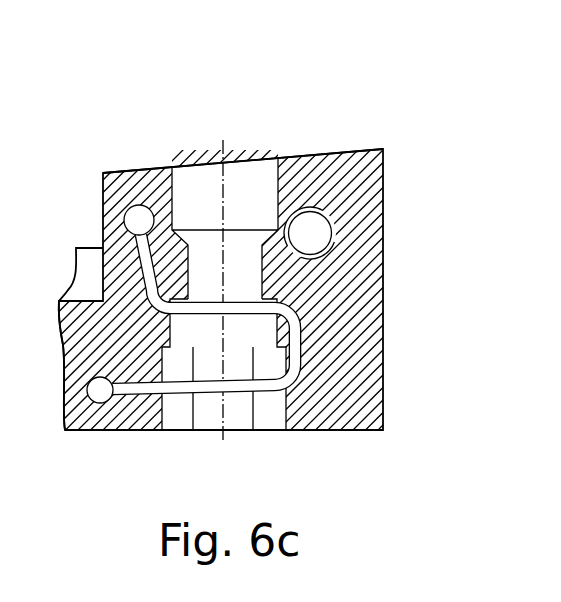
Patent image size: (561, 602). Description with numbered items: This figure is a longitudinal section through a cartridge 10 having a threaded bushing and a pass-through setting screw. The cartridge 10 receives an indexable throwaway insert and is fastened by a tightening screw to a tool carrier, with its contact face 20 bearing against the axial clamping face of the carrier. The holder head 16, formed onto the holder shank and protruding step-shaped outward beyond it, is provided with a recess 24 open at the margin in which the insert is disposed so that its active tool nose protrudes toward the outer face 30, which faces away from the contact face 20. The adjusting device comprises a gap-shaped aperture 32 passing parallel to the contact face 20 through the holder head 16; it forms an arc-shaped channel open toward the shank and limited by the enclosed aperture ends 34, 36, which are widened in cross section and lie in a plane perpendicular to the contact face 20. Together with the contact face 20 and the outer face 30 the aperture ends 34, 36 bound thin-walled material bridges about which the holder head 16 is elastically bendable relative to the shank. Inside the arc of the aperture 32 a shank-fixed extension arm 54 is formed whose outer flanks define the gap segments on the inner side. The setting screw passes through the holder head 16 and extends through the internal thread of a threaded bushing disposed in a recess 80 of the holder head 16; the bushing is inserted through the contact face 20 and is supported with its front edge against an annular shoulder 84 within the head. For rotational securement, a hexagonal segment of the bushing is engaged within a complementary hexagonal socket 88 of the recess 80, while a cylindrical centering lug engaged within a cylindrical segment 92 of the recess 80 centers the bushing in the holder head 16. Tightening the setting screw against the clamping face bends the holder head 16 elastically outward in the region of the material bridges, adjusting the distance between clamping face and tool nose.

The cartridge 10 is at (384, 197).
The holder head 16 is at (352, 246).
The contact face 20 is at (352, 430).
The recess 24 is at (88, 267).
The outer face 30 is at (323, 152).
The aperture 32 is at (299, 318).
The aperture end 34 is at (139, 222).
The aperture end 36 is at (100, 390).
The extension arm 54 is at (240, 335).
The recess 80 is at (182, 418).
The annular shoulder 84 is at (170, 318).
The hexagonal socket 88 is at (266, 412).
The cylindrical segment 92 is at (234, 326).